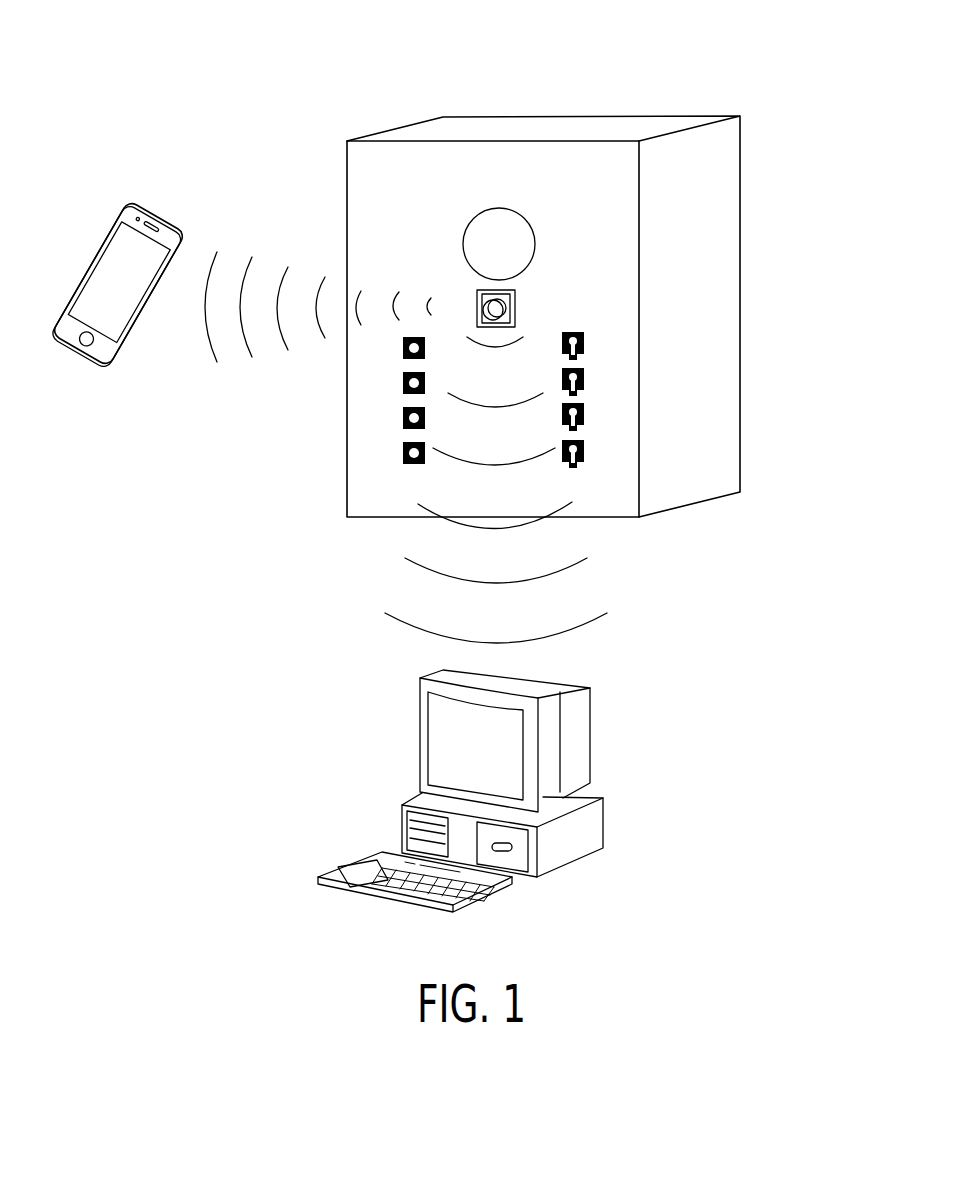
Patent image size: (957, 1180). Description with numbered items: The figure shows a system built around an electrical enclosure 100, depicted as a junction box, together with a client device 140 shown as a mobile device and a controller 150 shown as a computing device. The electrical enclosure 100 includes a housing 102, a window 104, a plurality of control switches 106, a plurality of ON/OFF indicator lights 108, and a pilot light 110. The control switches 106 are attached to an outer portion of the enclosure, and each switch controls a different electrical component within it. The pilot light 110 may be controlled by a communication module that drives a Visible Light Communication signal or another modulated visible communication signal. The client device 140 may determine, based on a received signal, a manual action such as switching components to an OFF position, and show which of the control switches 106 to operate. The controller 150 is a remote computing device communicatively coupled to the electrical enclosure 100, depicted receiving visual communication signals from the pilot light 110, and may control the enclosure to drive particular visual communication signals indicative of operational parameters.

The electrical enclosure 100 is at (710, 80).
The housing 102 is at (610, 492).
The window 104 is at (521, 213).
The control switches 106 is at (590, 330).
The ON/OFF indicator lights 108 is at (398, 330).
The pilot light 110 is at (478, 290).
The client device 140 is at (95, 247).
The controller 150 is at (595, 740).